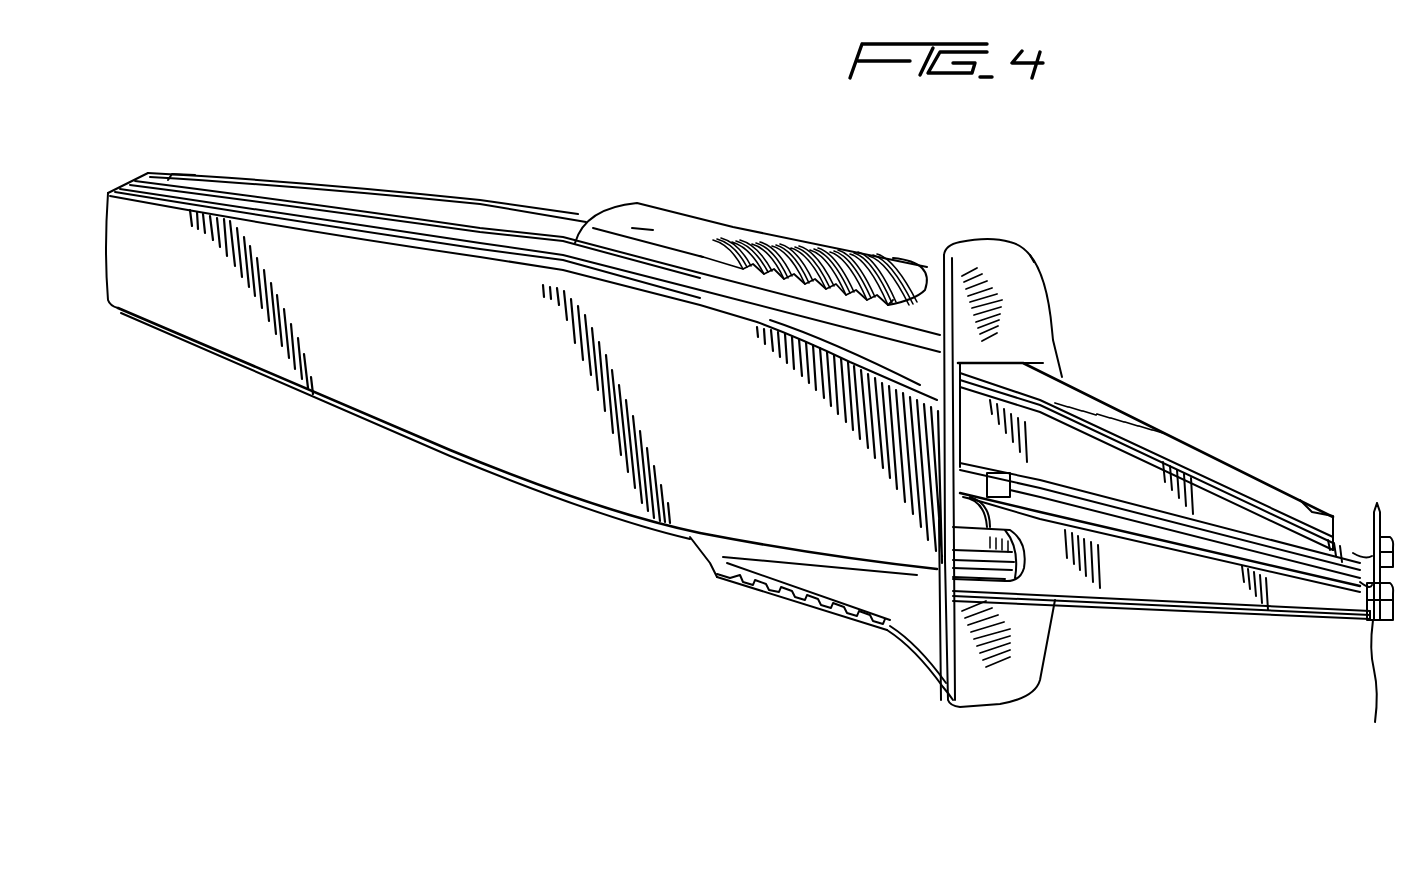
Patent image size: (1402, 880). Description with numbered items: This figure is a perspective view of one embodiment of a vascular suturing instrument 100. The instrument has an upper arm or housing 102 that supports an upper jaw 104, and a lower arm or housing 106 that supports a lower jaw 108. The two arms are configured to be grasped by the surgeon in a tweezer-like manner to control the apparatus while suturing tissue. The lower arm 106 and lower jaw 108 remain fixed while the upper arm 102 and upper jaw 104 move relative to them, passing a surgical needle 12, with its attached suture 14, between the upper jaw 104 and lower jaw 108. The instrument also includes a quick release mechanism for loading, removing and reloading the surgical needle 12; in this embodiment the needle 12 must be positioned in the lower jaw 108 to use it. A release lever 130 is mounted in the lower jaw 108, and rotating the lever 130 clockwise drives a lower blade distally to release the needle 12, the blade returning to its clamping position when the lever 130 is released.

The vascular suturing instrument 100 is at (408, 511).
The upper arm 102 is at (745, 236).
The upper jaw 104 is at (1183, 447).
The lower arm 106 is at (770, 597).
The lower jaw 108 is at (1157, 583).
The release lever 130 is at (1025, 557).
The surgical needle 12 is at (1372, 520).
The suture 14 is at (1370, 667).